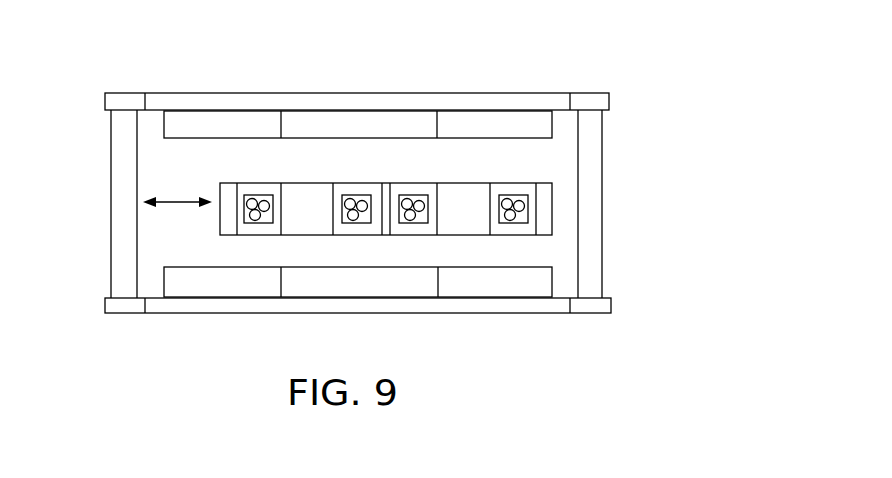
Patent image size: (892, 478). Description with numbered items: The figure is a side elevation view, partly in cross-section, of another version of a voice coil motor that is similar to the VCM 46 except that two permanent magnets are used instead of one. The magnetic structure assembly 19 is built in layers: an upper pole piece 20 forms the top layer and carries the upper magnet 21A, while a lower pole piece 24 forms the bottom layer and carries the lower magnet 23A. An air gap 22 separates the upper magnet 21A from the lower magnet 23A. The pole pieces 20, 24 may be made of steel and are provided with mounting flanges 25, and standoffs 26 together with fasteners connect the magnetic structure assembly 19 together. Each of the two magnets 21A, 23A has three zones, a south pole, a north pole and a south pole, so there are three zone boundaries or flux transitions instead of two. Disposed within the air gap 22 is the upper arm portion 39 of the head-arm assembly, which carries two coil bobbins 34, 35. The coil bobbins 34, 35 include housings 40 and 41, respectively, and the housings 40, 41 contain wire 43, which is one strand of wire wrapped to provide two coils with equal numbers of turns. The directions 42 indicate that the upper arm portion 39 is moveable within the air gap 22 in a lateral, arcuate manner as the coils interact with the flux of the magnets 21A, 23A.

The magnetic structure assembly 19 is at (226, 76).
The VCM 46 is at (265, 37).
The upper pole piece 20 is at (342, 102).
The upper magnet 21A is at (450, 123).
The air gap 22 is at (165, 156).
The lower magnet 23A is at (470, 280).
The lower pole piece 24 is at (343, 303).
The mounting flanges 25 is at (128, 101).
The standoffs 26 is at (588, 185).
The coil bobbin 34 is at (267, 176).
The coil bobbin 35 is at (411, 176).
The upper arm portion 39 is at (627, 225).
The housing 40 is at (247, 228).
The housing 41 is at (427, 227).
The directions 42 is at (177, 216).
The wire 43 is at (249, 205).